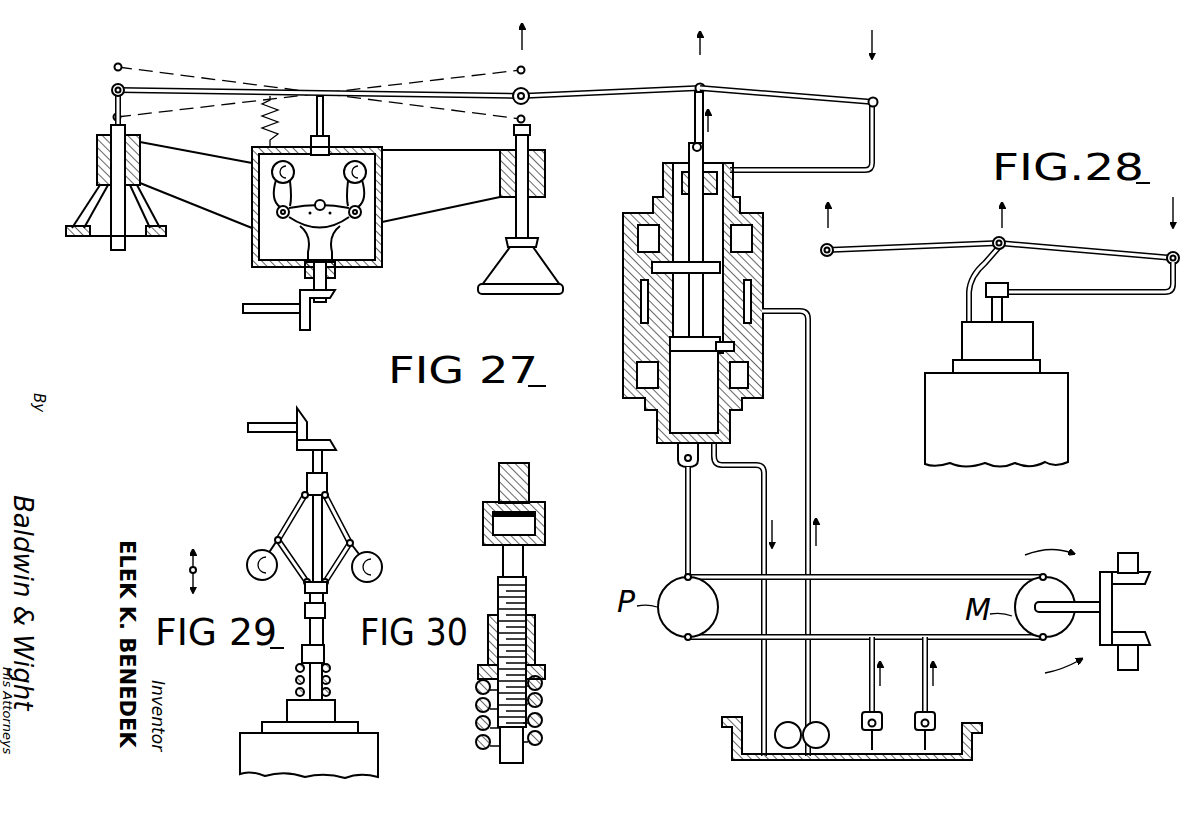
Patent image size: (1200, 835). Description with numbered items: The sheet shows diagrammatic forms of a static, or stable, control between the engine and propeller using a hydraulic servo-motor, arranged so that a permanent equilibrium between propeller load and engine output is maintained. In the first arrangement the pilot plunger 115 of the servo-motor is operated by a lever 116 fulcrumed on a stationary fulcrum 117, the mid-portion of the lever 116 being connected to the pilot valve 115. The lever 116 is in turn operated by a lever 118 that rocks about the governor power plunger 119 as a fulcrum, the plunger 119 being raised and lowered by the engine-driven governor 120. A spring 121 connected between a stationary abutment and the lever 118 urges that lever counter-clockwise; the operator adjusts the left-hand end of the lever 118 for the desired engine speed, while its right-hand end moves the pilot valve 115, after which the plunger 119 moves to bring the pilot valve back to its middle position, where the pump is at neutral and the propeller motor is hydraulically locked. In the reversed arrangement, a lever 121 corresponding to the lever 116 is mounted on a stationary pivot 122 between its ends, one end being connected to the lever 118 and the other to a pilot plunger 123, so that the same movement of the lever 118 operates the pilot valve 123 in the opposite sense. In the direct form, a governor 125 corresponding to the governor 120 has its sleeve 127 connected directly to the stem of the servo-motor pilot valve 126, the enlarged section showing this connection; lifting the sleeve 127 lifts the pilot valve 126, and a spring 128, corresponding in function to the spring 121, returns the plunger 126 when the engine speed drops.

In FIG. 27, the pilot plunger 115 is at (704, 153).
In FIG. 27, the lever 116 is at (795, 72).
In FIG. 27, the stationary fulcrum 117 is at (877, 101).
In FIG. 27, the lever 118 is at (318, 88).
In FIG. 27, the governor power plunger 119 is at (326, 123).
In FIG. 27, the governor 120 is at (360, 170).
In FIG. 27, the spring / lever 121 is at (260, 122).
In FIG. 28, the spring / lever 121 is at (885, 249).
In FIG. 28, the stationary pivot 122 is at (1005, 242).
In FIG. 28, the pilot plunger 123 is at (1005, 303).
In FIG. 29, the governor 125 is at (370, 566).
In FIG. 29, the servo-motor pilot valve 126 is at (325, 677).
In FIG. 30, the sleeve 127 is at (540, 516).
In FIG. 29, the spring 128 is at (328, 690).
In FIG. 30, the spring 128 is at (546, 700).